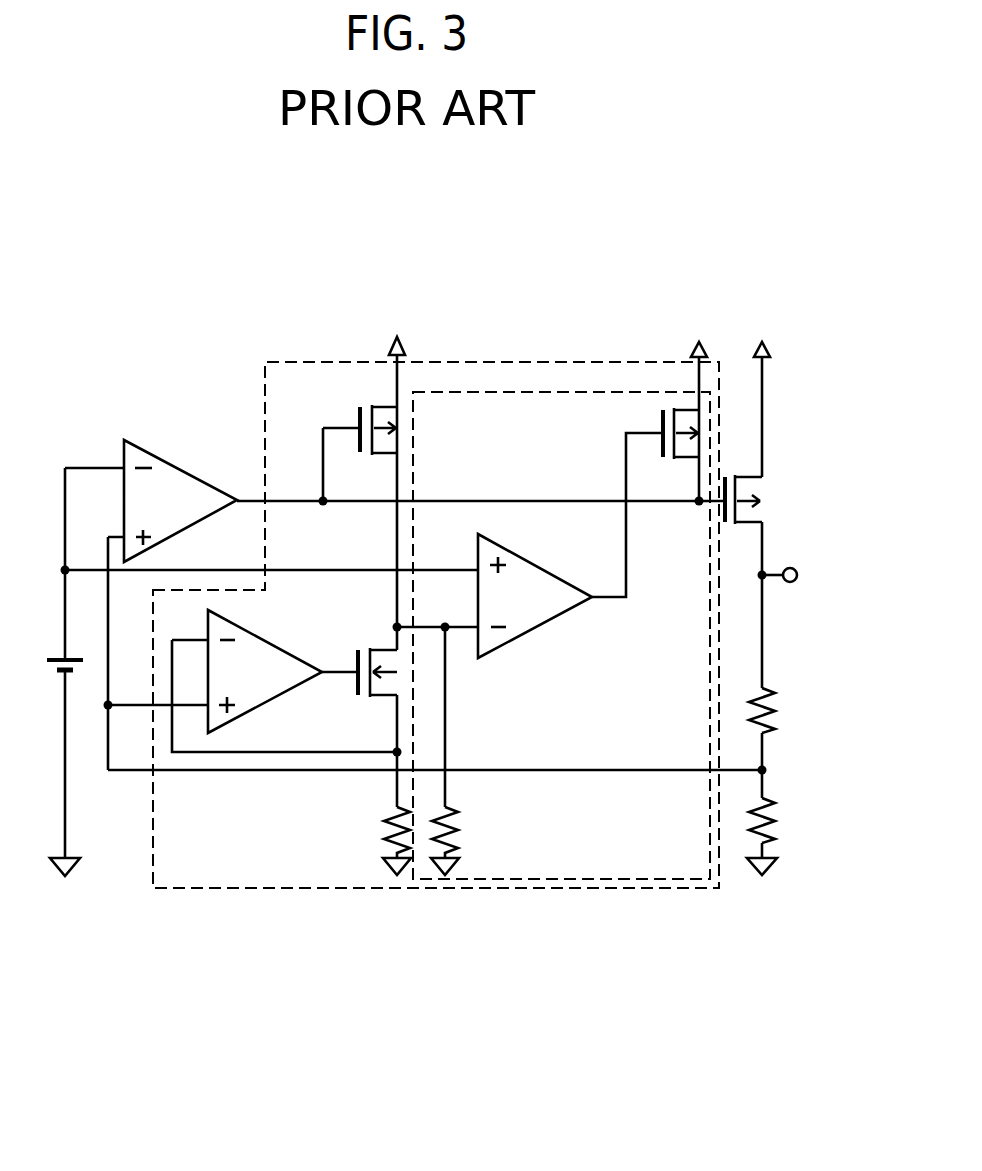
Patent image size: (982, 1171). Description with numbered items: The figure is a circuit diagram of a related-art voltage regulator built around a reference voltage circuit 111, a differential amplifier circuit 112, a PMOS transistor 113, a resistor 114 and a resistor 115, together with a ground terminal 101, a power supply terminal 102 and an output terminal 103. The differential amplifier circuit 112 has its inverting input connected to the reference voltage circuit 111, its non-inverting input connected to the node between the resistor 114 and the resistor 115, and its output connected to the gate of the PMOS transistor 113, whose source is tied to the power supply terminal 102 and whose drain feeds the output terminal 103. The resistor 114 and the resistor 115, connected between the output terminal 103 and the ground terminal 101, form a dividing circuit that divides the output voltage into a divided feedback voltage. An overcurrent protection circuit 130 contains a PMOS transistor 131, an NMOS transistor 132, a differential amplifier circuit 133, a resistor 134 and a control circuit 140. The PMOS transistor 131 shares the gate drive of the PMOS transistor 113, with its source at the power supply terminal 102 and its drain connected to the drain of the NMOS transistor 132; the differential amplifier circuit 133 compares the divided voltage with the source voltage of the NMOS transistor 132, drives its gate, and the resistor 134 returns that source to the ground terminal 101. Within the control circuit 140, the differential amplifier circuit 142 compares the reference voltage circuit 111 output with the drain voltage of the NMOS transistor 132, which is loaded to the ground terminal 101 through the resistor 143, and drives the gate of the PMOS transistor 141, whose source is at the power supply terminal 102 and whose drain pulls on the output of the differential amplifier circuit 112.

The ground terminal 101 is at (766, 892).
The power supply terminal 102 is at (587, 331).
The output terminal 103 is at (796, 568).
The reference voltage circuit 111 is at (57, 670).
The differential amplifier circuit 112 is at (137, 438).
The PMOS transistor 113 is at (762, 500).
The resistor 114 is at (777, 713).
The resistor 115 is at (777, 820).
The overcurrent protection circuit 130 is at (318, 898).
The PMOS transistor 131 is at (370, 395).
The NMOS transistor 132 is at (383, 645).
The differential amplifier circuit 133 is at (287, 693).
The resistor 134 is at (383, 832).
The control circuit 140 is at (475, 402).
The PMOS transistor 141 is at (653, 420).
The differential amplifier circuit 142 is at (540, 625).
The resistor 143 is at (458, 830).